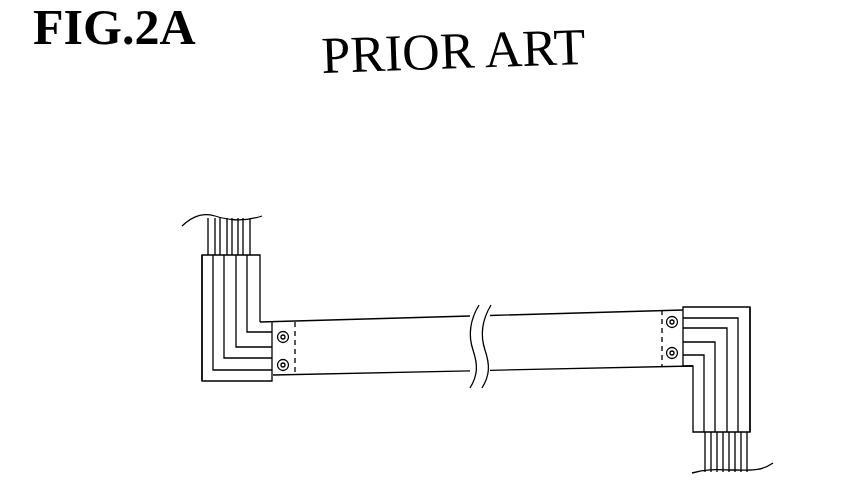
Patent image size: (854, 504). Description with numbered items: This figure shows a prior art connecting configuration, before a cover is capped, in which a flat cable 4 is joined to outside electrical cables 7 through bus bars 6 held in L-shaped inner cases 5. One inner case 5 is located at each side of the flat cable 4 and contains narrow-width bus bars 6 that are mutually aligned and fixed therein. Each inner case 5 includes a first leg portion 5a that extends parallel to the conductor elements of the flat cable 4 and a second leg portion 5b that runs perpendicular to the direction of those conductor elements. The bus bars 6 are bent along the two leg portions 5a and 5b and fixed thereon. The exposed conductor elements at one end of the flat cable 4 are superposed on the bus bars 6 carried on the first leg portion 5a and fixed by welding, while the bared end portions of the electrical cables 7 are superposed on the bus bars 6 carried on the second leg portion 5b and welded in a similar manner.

The flat cable 4 is at (390, 317).
The inner case 5 is at (202, 298).
The first leg portion 5a is at (268, 320).
The second leg portion 5b is at (205, 277).
The bus bars 6 is at (250, 290).
The outside electrical cables 7 is at (250, 228).